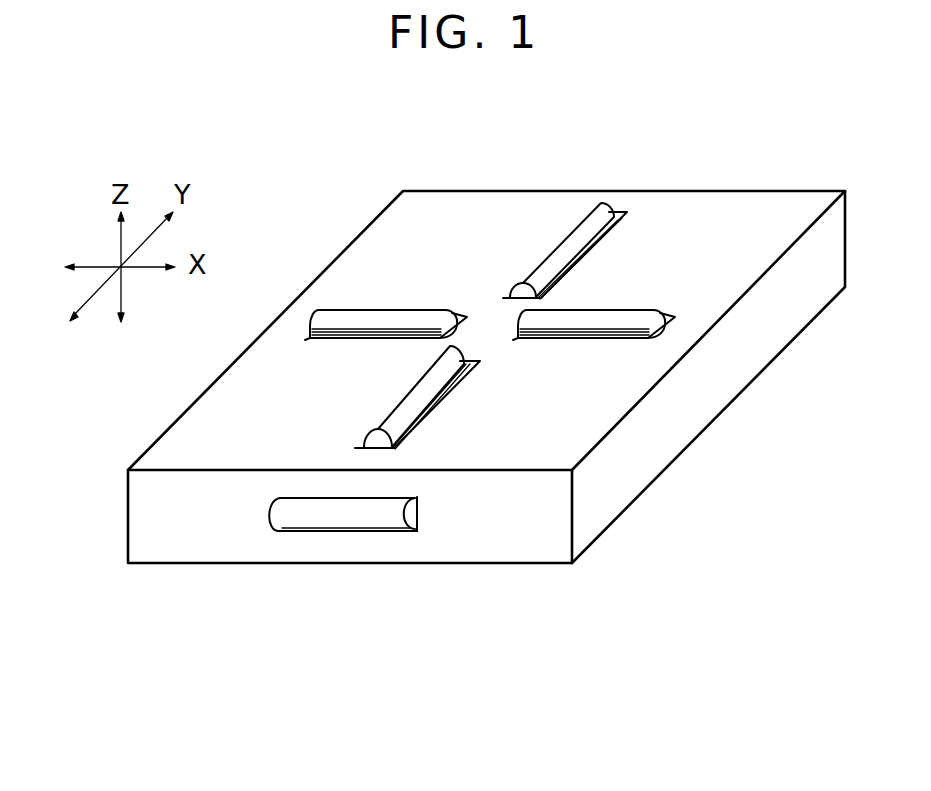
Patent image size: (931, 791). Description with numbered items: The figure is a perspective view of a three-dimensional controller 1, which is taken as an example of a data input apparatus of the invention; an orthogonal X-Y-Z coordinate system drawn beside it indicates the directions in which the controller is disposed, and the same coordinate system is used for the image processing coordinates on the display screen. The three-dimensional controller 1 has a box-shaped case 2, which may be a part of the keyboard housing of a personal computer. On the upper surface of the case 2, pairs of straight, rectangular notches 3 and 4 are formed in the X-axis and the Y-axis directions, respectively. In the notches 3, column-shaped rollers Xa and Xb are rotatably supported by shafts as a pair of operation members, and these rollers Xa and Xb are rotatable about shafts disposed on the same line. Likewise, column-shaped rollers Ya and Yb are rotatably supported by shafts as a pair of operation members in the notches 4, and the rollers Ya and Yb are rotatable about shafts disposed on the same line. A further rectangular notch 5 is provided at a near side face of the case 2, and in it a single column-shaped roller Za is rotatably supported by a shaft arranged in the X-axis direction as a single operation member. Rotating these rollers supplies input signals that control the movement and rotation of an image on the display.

The three-dimensional controller 1 is at (347, 205).
The case 2 is at (478, 563).
The notches 3 is at (308, 337).
The notches 4 is at (627, 212).
The notch 5 is at (397, 527).
The roller Xa is at (590, 322).
The roller Xb is at (382, 318).
The roller Ya is at (558, 250).
The roller Yb is at (403, 410).
The roller Za is at (337, 513).